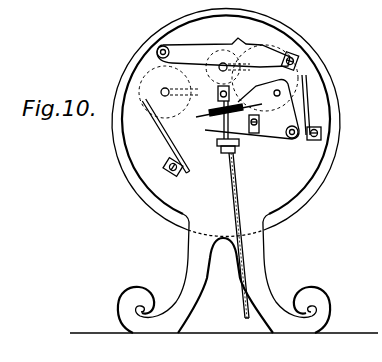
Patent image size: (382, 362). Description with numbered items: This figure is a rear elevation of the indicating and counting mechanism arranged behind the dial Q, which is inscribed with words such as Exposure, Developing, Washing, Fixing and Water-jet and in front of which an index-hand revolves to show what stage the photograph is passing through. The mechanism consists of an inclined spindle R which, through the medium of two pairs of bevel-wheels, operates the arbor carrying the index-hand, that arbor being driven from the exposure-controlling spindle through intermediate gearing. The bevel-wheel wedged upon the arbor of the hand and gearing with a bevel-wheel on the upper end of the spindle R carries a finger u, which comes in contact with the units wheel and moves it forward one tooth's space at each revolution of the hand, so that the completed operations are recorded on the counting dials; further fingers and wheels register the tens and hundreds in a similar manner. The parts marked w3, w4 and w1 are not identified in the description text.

The dial Q is at (224, 171).
The inclined spindle R is at (234, 209).
The finger u is at (245, 110).
The lever arm w3 is at (228, 52).
The gear wheel w4 is at (276, 92).
The gear wheel w1 is at (194, 113).